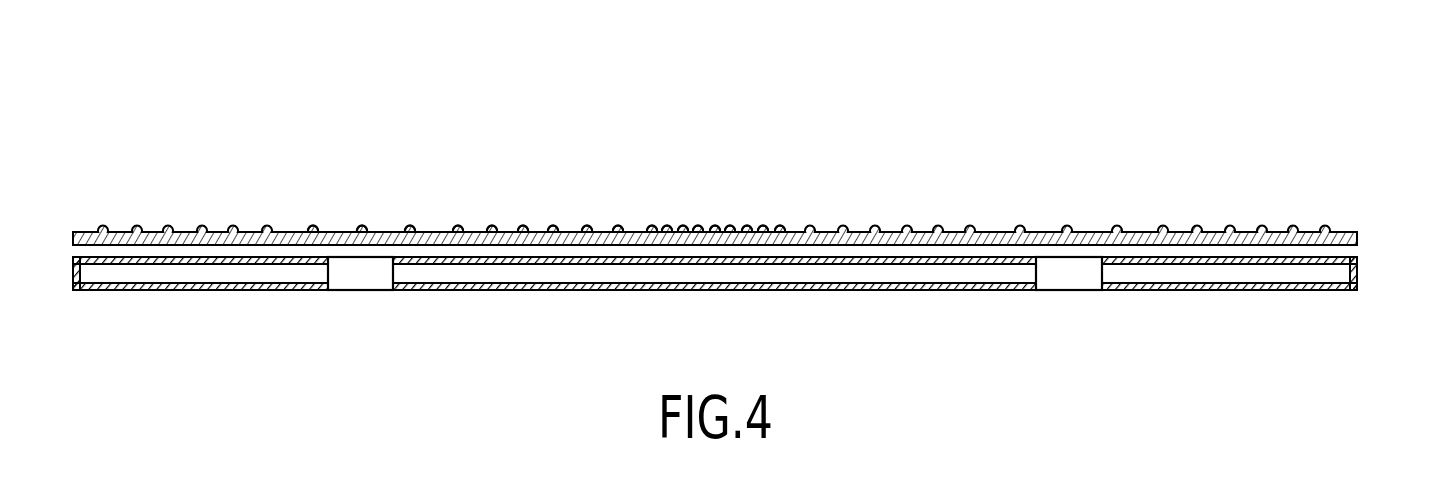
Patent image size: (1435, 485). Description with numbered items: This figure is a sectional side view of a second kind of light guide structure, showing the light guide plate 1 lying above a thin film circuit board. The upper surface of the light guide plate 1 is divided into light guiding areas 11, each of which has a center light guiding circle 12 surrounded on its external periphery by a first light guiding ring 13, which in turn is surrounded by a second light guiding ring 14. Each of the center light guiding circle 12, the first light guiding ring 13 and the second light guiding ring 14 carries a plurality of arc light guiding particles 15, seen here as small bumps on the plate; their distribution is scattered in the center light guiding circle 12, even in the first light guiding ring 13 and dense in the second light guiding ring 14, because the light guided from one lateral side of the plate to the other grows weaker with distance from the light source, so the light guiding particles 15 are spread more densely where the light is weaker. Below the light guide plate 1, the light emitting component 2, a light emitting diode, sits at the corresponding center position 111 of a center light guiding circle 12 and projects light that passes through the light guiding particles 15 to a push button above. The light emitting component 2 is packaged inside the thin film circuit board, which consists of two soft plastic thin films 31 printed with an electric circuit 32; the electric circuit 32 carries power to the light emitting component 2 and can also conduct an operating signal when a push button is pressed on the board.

The light guide plate 1 is at (749, 221).
The light guiding area 11 is at (715, 148).
The center position 111 is at (362, 228).
The center light guiding circle 12 is at (332, 215).
The first light guiding ring 13 is at (518, 215).
The second light guiding ring 14 is at (688, 215).
The light guiding particle 15 is at (555, 227).
The light emitting component 2 is at (1067, 272).
The plastic thin film 31 is at (510, 287).
The electric circuit 32 is at (797, 263).